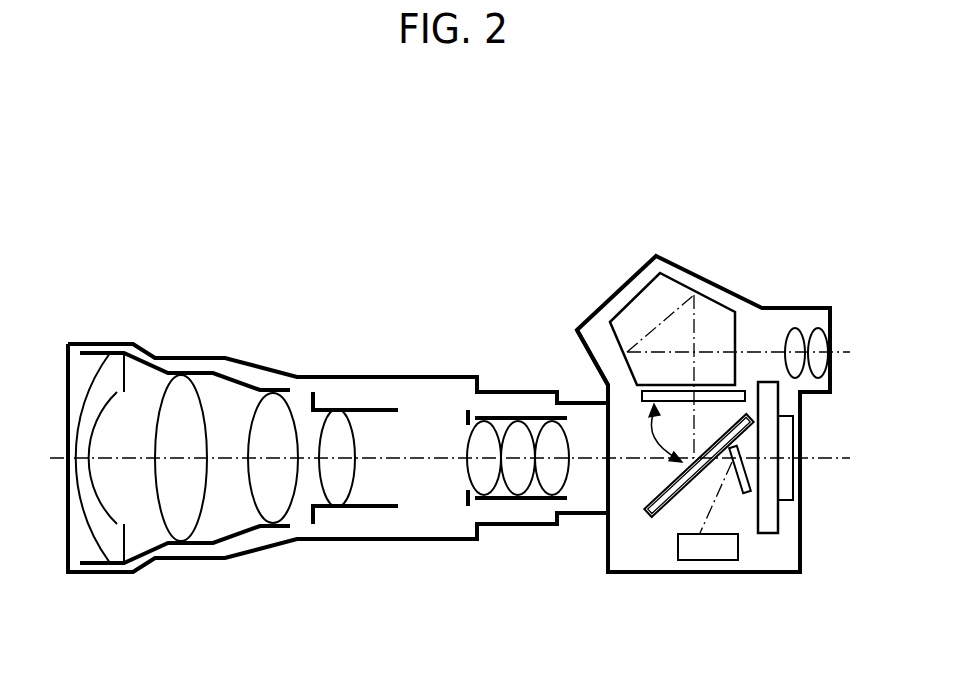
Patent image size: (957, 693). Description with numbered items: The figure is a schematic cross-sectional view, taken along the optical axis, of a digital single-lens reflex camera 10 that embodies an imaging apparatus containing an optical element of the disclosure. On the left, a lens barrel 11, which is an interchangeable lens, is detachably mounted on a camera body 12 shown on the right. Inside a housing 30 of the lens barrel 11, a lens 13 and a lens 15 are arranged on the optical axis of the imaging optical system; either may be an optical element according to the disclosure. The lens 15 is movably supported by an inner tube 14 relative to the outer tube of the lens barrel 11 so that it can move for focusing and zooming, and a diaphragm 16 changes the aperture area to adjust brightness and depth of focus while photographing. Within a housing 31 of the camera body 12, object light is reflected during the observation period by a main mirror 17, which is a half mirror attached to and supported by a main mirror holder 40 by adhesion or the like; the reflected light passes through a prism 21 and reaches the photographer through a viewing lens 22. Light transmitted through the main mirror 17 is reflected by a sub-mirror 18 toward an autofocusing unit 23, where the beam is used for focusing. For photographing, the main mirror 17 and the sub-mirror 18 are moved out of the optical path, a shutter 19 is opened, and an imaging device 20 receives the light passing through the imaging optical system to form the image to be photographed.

The digital single-lens reflex camera 10 is at (523, 127).
The lens barrel 11 is at (585, 200).
The camera body 12 is at (853, 200).
The lens 13 is at (140, 344).
The housing 30 is at (252, 365).
The inner tube 14 is at (352, 410).
The lens 15 is at (336, 494).
The diaphragm 16 is at (468, 412).
The housing 31 is at (607, 302).
The main mirror 17 is at (642, 510).
The sub-mirror 18 is at (750, 471).
The shutter 19 is at (767, 522).
The imaging device 20 is at (793, 487).
The prism 21 is at (723, 323).
The viewing lens 22 is at (817, 338).
The autofocusing (AF) unit 23 is at (710, 560).
The main mirror holder 40 is at (656, 517).